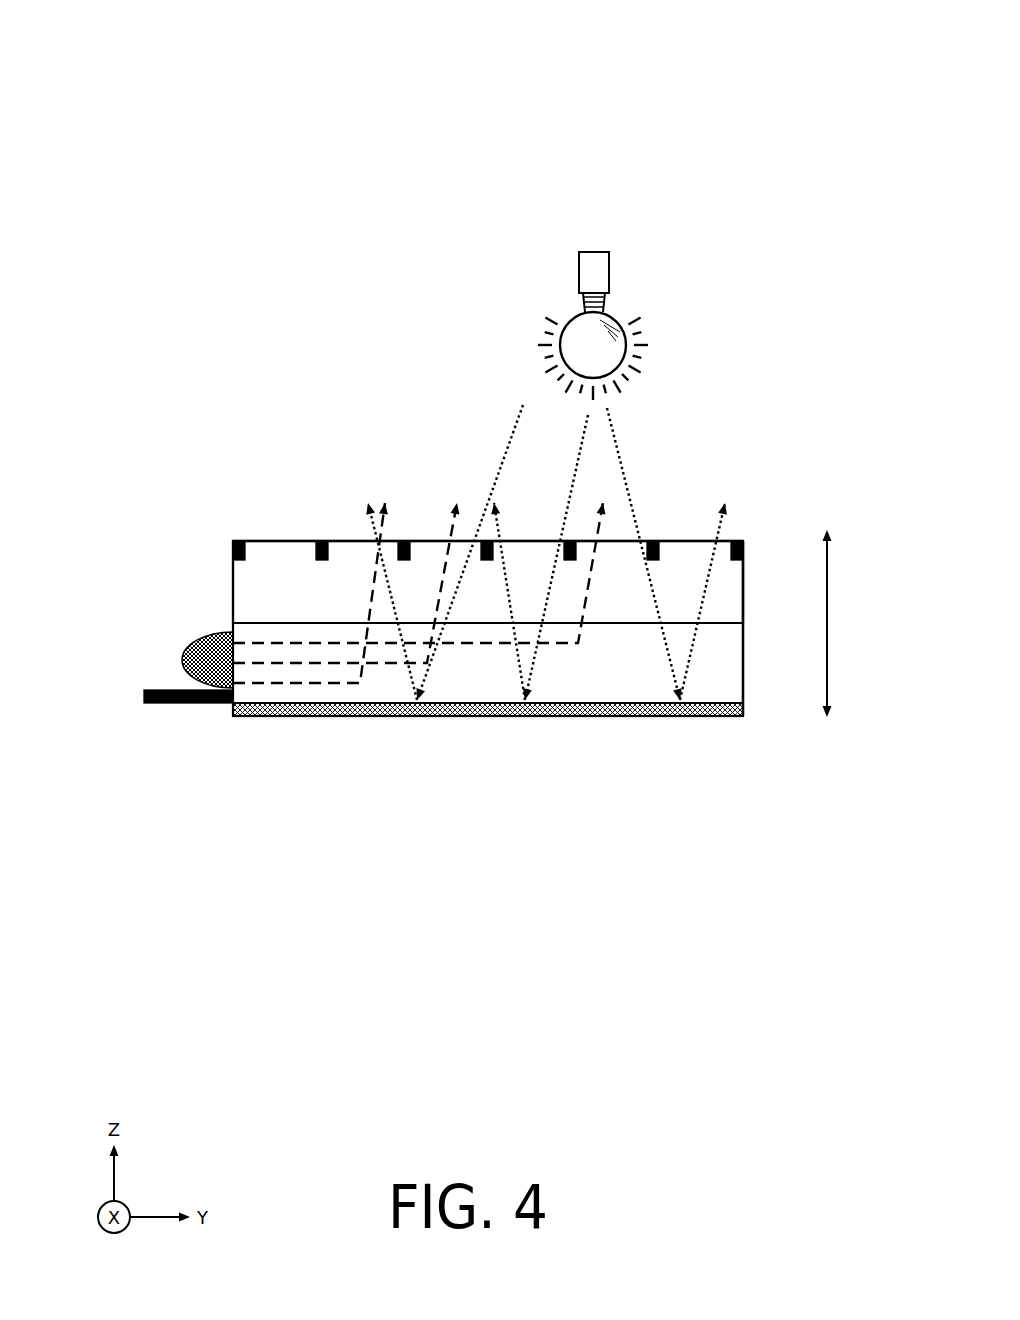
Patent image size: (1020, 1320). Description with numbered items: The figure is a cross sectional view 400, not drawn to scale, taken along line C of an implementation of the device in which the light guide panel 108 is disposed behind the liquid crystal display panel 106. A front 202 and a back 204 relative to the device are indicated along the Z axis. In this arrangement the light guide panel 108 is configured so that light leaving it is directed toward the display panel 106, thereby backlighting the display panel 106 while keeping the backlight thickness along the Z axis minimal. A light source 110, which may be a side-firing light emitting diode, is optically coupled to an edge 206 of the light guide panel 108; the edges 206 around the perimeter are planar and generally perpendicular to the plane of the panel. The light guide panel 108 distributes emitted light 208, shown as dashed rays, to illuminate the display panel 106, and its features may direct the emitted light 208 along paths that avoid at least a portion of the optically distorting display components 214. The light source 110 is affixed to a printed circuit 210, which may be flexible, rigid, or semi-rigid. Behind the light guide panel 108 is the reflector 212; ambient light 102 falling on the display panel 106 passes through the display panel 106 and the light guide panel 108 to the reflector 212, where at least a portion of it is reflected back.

The cross sectional view 400 is at (752, 57).
The ambient light 102 is at (617, 443).
The liquid crystal display panel 106 is at (278, 573).
The light guide panel 108 is at (578, 676).
The light source 110 is at (222, 647).
The front 202 is at (826, 598).
The back 204 is at (827, 736).
The edge 206 is at (746, 575).
The emitted light 208 is at (292, 685).
The printed circuit 210 is at (160, 703).
The reflector 212 is at (273, 713).
The display components 214 is at (237, 538).